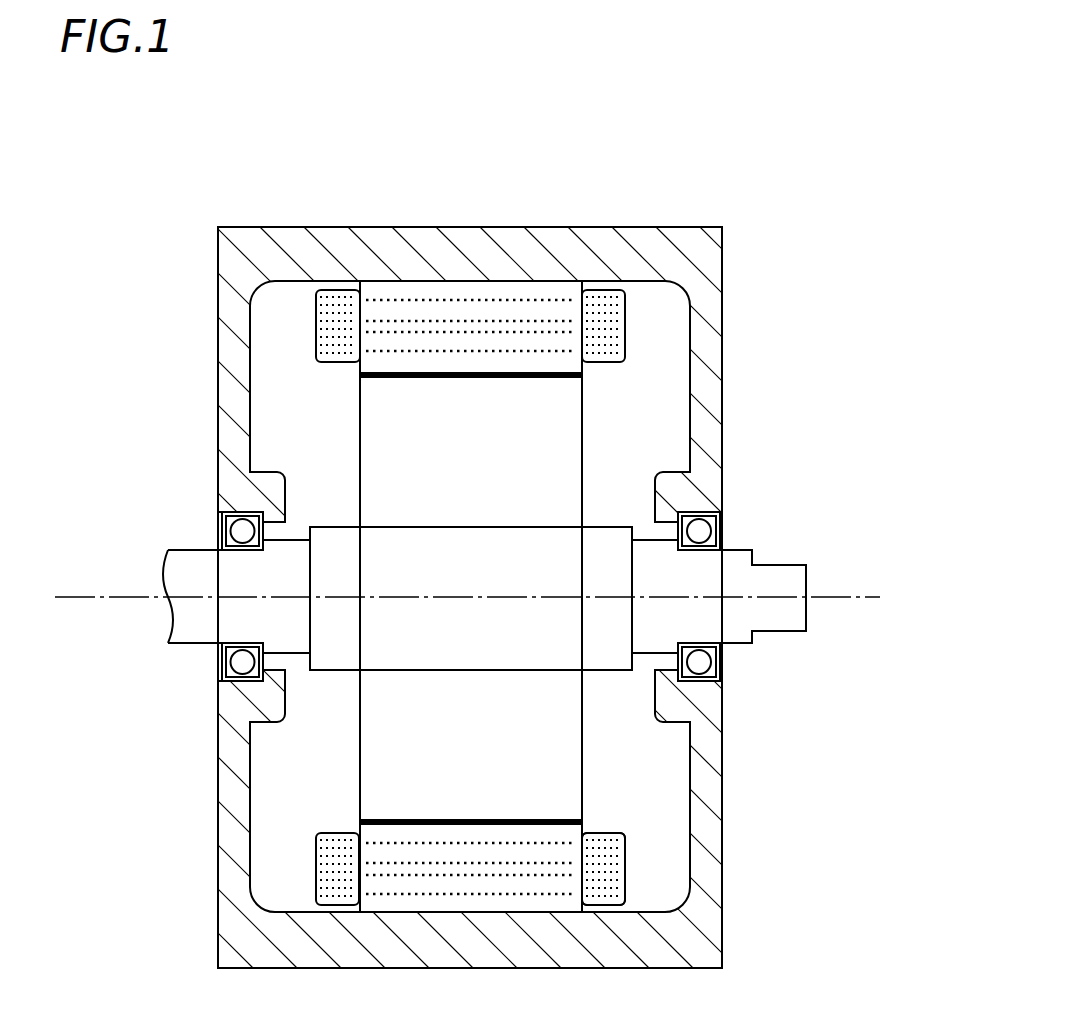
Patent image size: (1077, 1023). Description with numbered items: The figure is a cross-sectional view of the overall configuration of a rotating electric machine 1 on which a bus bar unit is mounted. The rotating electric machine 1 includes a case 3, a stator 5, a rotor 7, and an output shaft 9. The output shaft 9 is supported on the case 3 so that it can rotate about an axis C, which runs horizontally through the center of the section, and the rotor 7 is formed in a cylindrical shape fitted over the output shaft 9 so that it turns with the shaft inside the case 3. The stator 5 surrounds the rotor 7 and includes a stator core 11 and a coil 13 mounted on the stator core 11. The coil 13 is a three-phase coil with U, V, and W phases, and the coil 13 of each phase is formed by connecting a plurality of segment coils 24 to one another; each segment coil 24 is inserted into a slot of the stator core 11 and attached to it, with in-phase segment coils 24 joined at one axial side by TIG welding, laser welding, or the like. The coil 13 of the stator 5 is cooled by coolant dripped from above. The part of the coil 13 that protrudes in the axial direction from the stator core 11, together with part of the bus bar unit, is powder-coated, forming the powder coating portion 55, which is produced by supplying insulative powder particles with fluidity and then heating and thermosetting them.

The rotating electric machine 1 is at (748, 197).
The case 3 is at (230, 268).
The stator 5 is at (652, 596).
The stator core 11 is at (573, 345).
The powder coating portion 55 is at (607, 290).
The rotor 7 is at (548, 783).
The output shaft 9 is at (203, 633).
The coil 13 is at (771, 874).
The segment coil 24 is at (632, 877).
The axis C is at (92, 597).